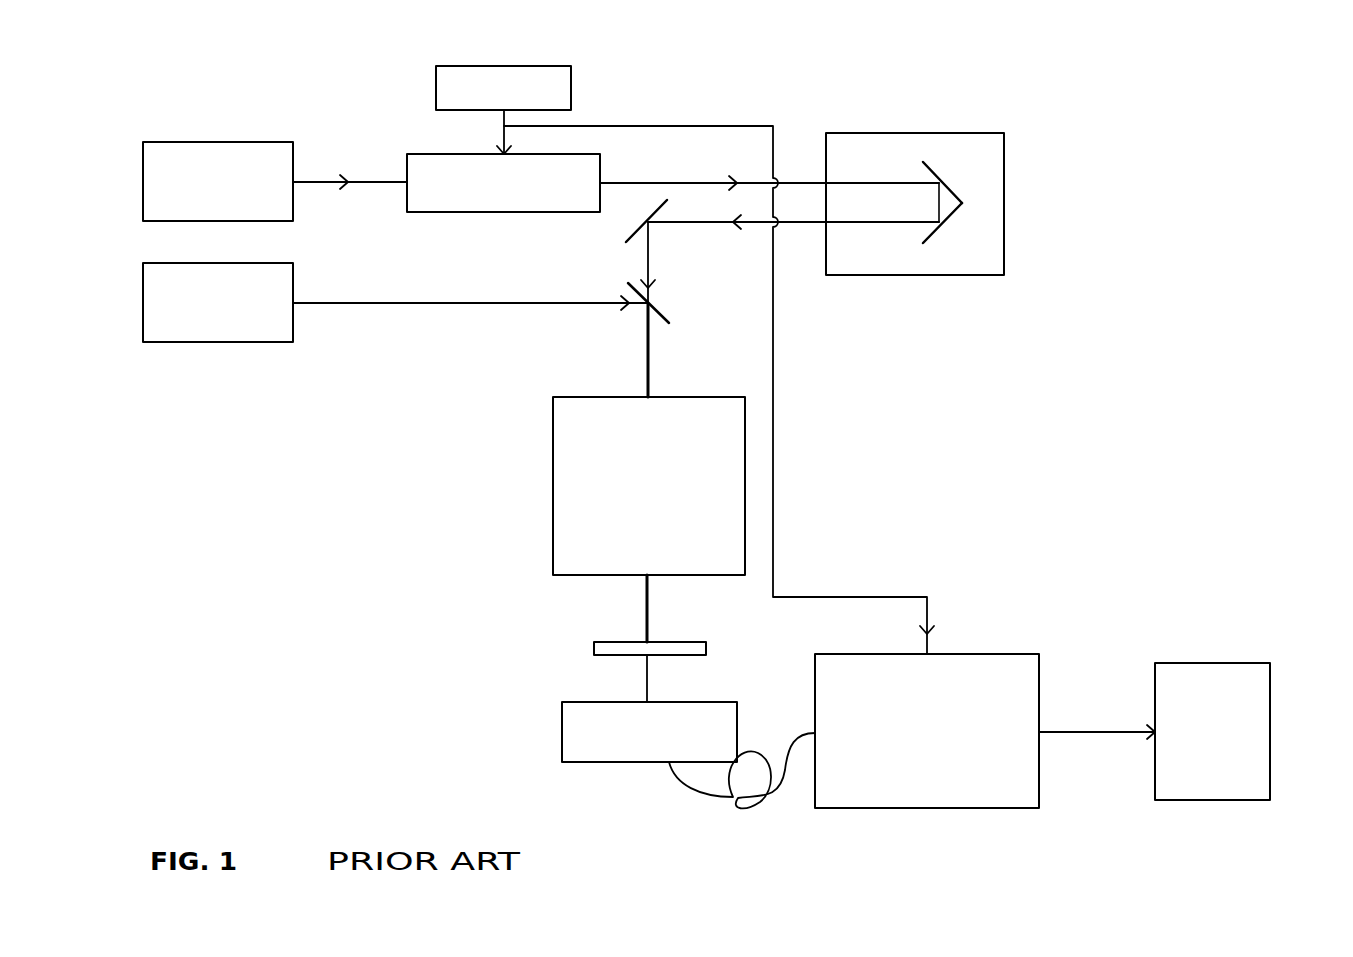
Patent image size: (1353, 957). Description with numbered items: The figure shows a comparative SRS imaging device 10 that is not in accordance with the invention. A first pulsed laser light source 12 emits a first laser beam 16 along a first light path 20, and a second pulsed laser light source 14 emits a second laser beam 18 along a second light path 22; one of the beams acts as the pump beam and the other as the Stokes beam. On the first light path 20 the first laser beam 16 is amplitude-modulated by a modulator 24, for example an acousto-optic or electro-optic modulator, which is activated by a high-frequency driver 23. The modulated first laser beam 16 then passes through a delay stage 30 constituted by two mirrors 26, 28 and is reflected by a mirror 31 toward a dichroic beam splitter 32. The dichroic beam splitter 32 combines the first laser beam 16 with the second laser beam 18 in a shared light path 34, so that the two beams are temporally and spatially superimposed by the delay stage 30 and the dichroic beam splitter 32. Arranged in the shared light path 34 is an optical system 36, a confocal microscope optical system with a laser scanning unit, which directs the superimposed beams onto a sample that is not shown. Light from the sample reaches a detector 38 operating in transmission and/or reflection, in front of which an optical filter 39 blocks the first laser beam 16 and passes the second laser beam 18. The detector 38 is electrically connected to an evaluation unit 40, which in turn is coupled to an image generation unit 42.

The SRS imaging device 10 is at (1170, 108).
The first pulsed laser light source 12 is at (218, 142).
The second pulsed laser light source 14 is at (217, 342).
The first laser beam 16 is at (348, 180).
The second laser beam 18 is at (628, 300).
The first light path 20 is at (378, 185).
The second light path 22 is at (470, 302).
The high-frequency driver 23 is at (571, 90).
The modulator 24 is at (600, 168).
The mirror 26 is at (937, 176).
The mirror 28 is at (937, 230).
The delay stage 30 is at (1004, 180).
The mirror 31 is at (633, 236).
The dichroic beam splitter 32 is at (660, 307).
The shared light path 34 is at (650, 370).
The optical system 36 is at (553, 492).
The detector 38 is at (562, 725).
The optical filter 39 is at (594, 650).
The evaluation unit 40 is at (1039, 698).
The image generation unit 42 is at (1270, 690).